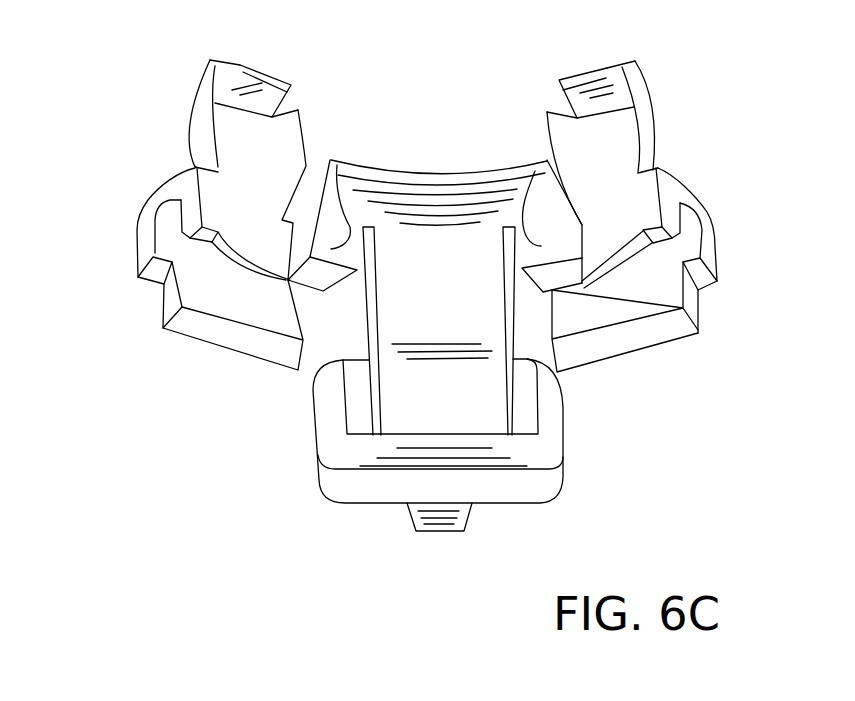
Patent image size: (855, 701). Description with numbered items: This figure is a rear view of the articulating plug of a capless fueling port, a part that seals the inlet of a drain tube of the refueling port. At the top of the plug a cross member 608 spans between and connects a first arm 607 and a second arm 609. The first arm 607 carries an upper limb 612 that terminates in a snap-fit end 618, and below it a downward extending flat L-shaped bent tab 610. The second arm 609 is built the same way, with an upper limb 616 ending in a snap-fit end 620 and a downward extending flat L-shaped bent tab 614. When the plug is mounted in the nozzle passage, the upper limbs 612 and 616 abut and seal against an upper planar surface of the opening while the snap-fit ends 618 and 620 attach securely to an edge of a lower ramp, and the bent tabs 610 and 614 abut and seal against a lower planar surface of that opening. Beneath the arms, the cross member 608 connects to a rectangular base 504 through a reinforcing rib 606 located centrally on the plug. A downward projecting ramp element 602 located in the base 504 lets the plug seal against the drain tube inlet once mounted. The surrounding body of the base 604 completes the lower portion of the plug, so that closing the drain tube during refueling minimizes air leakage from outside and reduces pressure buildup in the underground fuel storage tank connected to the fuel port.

The rectangular base 504 is at (523, 420).
The downward projecting ramp element 602 is at (442, 531).
The base 604 is at (563, 481).
The reinforcing rib 606 is at (438, 367).
The first arm 607 is at (535, 171).
The cross member 608 is at (443, 162).
The second arm 609 is at (338, 166).
The downward extending flat L-shaped bent tab 610 is at (664, 261).
The upper limb 612 is at (610, 152).
The downward extending flat L-shaped bent tab 614 is at (187, 261).
The upper limb 616 is at (252, 141).
The snap-fit end 618 is at (580, 75).
The snap-fit end 620 is at (262, 80).